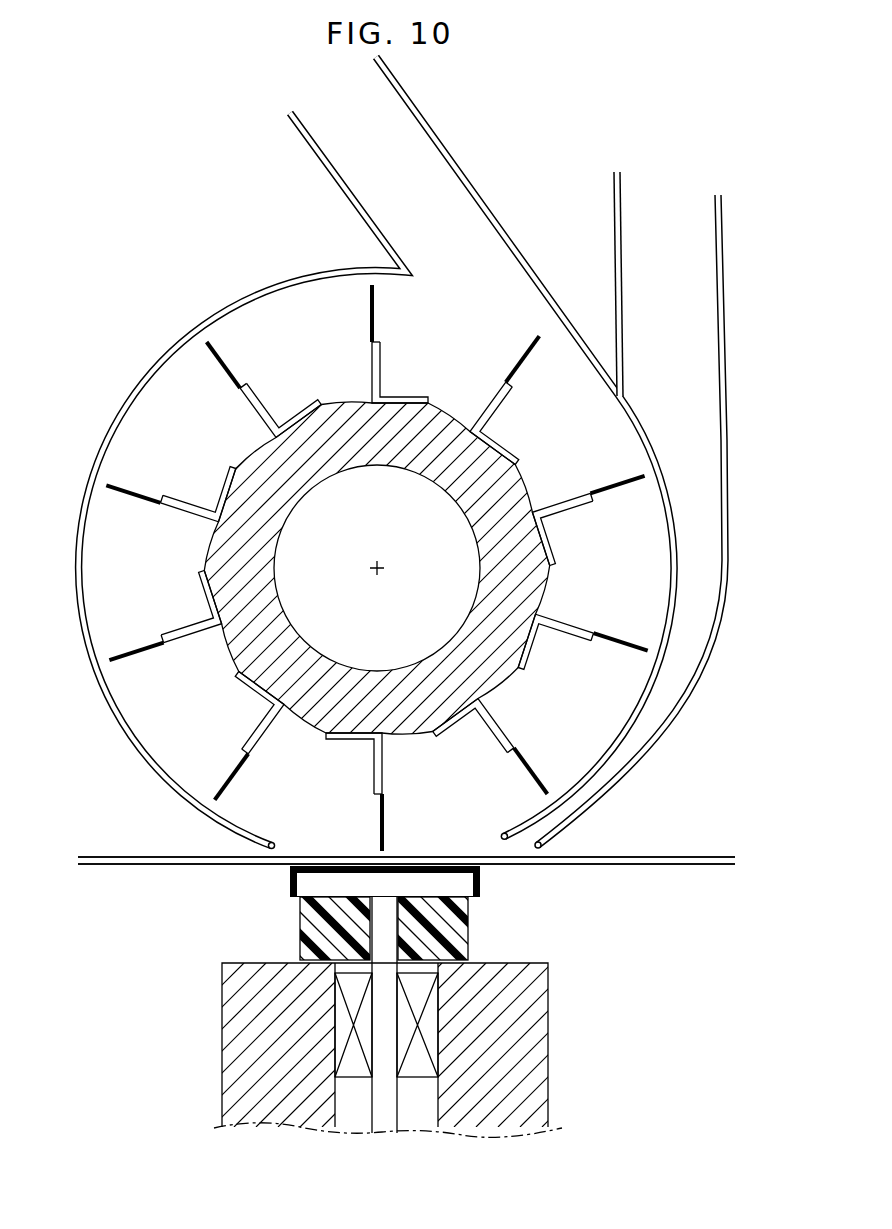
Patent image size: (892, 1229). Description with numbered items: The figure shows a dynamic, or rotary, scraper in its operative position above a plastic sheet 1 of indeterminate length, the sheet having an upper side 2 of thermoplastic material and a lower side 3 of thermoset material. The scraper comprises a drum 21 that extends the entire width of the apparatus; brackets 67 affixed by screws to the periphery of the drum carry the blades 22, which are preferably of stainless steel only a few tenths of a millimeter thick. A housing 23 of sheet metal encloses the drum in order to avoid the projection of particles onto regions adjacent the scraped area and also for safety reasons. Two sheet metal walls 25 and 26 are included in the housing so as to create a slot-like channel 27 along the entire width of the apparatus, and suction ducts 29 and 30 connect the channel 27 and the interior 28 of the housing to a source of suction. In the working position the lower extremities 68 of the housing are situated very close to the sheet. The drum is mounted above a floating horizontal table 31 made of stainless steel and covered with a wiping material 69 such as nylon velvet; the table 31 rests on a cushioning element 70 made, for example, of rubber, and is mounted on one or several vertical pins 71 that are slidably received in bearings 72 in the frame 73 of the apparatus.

The plastic sheet 1 is at (720, 856).
The upper side 2 is at (698, 854).
The lower side 3 is at (656, 866).
The drum 21 is at (233, 657).
The blades 22 is at (227, 369).
The housing 23 is at (207, 313).
The sheet metal wall 25 is at (676, 630).
The sheet metal wall 26 is at (706, 688).
The slot-like channel 27 is at (705, 537).
The interior of the housing 28 is at (297, 315).
The suction duct 29 is at (683, 267).
The suction duct 30 is at (405, 152).
The floating horizontal table 31 is at (296, 895).
The brackets 67 is at (168, 502).
The lower extremities of the housing 68 is at (266, 852).
The wiping material 69 is at (436, 878).
The cushioning element 70 is at (470, 930).
The vertical pins 71 is at (383, 1086).
The bearings 72 is at (432, 1024).
The frame 73 is at (536, 1088).